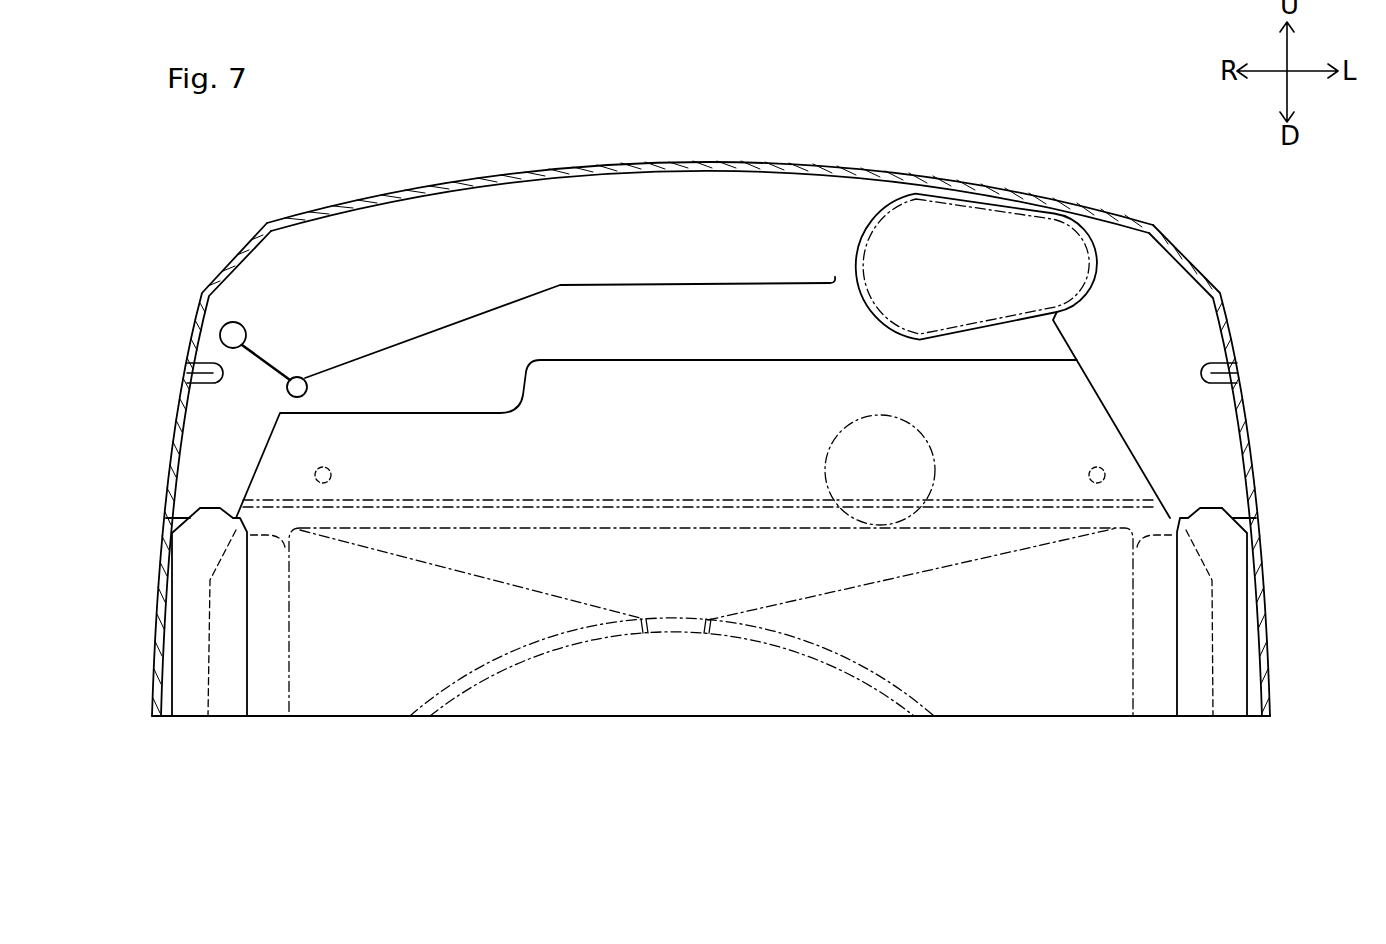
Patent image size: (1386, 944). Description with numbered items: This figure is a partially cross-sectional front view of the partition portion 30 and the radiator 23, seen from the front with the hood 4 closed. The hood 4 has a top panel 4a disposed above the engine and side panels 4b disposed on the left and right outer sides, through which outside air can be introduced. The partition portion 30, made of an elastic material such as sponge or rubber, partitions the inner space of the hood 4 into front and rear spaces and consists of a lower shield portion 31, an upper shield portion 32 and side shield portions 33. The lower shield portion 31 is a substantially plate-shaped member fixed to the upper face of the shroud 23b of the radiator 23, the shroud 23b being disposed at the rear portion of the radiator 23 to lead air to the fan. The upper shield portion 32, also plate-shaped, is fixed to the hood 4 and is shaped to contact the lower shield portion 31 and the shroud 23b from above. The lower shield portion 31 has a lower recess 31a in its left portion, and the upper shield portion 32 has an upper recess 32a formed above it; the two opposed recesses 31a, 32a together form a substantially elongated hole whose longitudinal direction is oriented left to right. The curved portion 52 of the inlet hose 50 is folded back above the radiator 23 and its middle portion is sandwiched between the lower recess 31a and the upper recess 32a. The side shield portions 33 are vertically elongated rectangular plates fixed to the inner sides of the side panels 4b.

The hood 4 is at (1148, 183).
The top panel 4a is at (743, 165).
The side panels 4b is at (170, 600).
The partition portion 30 is at (466, 174).
The lower shield portion 31 is at (665, 300).
The lower recess 31a is at (893, 337).
The upper shield portion 32 is at (604, 185).
The upper recess 32a is at (968, 215).
The side shield portions 33 is at (178, 672).
The inlet hose 50 is at (1047, 240).
The curved portion 52 is at (976, 266).
The radiator 23 is at (677, 700).
The shroud 23b is at (1022, 690).